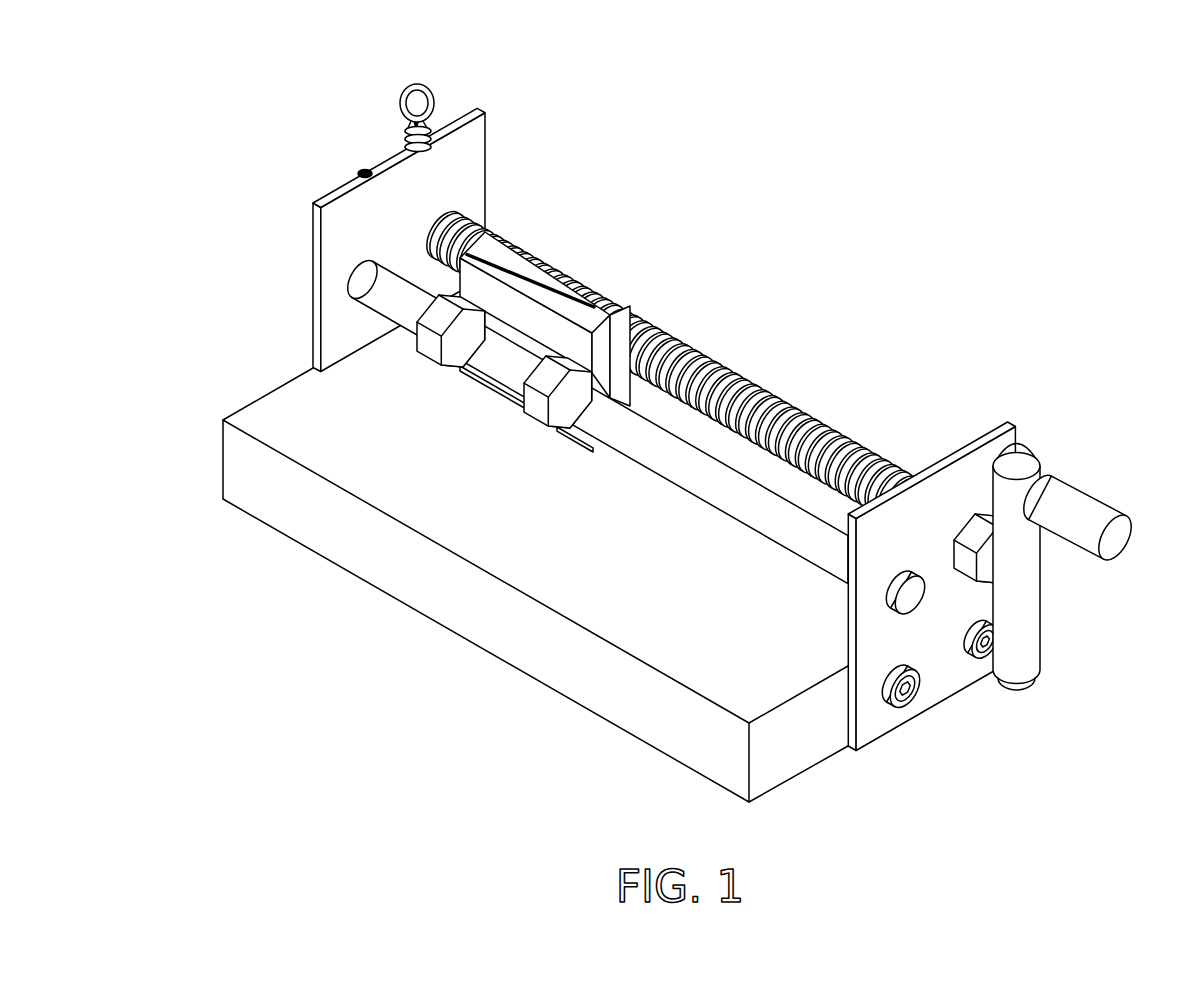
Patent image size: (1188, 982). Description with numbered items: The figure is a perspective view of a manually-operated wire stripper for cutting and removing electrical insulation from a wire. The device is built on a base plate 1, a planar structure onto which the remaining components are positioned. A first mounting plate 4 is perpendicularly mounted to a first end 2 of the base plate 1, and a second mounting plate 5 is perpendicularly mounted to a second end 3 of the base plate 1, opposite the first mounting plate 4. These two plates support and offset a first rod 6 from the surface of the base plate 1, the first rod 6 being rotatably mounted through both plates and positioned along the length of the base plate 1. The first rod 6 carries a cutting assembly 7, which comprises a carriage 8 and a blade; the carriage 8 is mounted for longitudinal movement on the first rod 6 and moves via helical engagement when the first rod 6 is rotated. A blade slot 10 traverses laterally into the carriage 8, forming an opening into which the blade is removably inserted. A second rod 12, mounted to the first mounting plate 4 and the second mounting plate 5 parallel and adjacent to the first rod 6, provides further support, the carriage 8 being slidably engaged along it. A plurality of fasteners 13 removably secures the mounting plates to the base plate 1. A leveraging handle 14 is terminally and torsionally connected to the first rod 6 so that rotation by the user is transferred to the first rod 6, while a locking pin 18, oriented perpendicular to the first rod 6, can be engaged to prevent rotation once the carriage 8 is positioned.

The base plate 1 is at (433, 634).
The first end 2 is at (263, 381).
The second end 3 is at (773, 736).
The first mounting plate 4 is at (317, 269).
The second mounting plate 5 is at (980, 443).
The first rod 6 is at (709, 339).
The cutting assembly 7 is at (566, 256).
The carriage 8 is at (573, 300).
The blade slot 10 is at (589, 298).
The second rod 12 is at (672, 477).
The plurality of fasteners 13 is at (977, 623).
The leveraging handle 14 is at (1080, 500).
The locking pin 18 is at (428, 90).